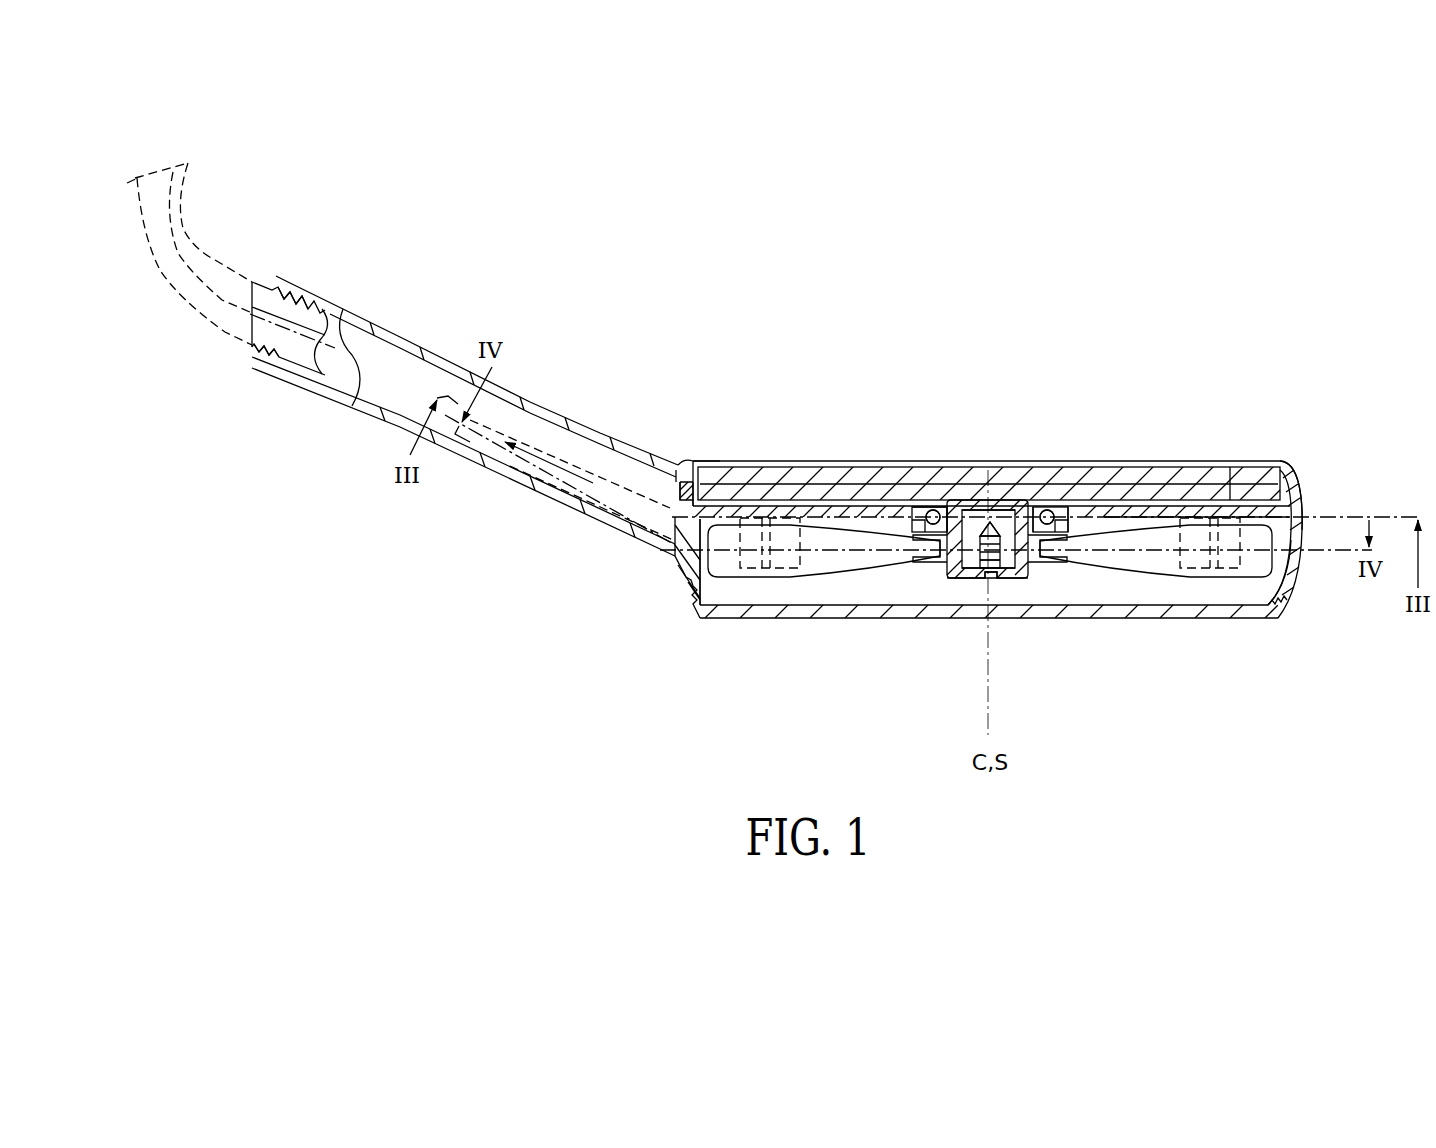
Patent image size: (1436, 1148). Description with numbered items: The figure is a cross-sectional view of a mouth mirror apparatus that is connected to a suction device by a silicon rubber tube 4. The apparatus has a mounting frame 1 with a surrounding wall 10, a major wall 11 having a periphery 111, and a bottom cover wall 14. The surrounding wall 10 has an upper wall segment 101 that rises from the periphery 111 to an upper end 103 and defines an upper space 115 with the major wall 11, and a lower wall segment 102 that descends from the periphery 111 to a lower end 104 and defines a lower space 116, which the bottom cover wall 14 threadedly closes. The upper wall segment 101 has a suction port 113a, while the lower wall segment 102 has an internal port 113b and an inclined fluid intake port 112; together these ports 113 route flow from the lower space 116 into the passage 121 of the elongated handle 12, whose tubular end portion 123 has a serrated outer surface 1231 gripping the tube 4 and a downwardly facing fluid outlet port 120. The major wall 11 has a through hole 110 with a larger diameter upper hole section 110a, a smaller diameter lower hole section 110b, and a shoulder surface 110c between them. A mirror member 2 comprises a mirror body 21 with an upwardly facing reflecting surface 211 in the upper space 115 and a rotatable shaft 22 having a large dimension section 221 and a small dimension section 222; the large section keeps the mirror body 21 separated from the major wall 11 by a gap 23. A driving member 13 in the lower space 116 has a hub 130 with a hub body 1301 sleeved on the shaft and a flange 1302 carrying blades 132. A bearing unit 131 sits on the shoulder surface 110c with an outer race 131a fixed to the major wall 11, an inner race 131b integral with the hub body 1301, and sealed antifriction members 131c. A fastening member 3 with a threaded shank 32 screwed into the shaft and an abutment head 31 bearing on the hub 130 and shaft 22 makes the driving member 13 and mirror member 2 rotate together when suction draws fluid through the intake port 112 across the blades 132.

The mounting frame 1 is at (1352, 338).
The surrounding wall 10 is at (1355, 427).
The upper wall segment 101 is at (1292, 476).
The lower wall segment 102 is at (1290, 565).
The upper end 103 is at (1288, 463).
The lower end 104 is at (1272, 605).
The major wall 11 is at (1163, 500).
The periphery 111 is at (1287, 512).
The fluid intake port 112 is at (778, 612).
The connecting portion 113 is at (757, 402).
The suction port 113a is at (680, 490).
The internal port 113b is at (723, 503).
The upper space 115 is at (793, 466).
The lower space 116 is at (760, 600).
The elongated handle 12 is at (432, 352).
The fluid outlet port 120 is at (256, 313).
The passage 121 is at (520, 416).
The tubular end portion 123 is at (274, 386).
The serrated outer surface 1231 is at (292, 292).
The driving member 13 is at (1122, 592).
The hub 130 is at (1035, 738).
The hub body 1301 is at (1043, 572).
The flange 1302 is at (1060, 558).
The bearing unit 131 is at (1000, 358).
The outer race 131a is at (1078, 510).
The inner race 131b is at (1022, 505).
The antifriction members 131c is at (1048, 510).
The blades 132 is at (820, 575).
The bottom cover wall 14 is at (1200, 612).
The mirror member 2 is at (1197, 458).
The mirror body 21 is at (833, 470).
The reflecting surface 211 is at (850, 472).
The rotatable shaft 22 is at (975, 580).
The large dimension section 221 is at (975, 520).
The small dimension section 222 is at (963, 585).
The gap 23 is at (1247, 490).
The fastening member 3 is at (1022, 590).
The abutment head 31 is at (1003, 585).
The threaded shank 32 is at (1006, 523).
The silicon rubber tube 4 is at (205, 246).
The through hole 110 is at (845, 318).
The larger diameter upper hole section 110a is at (925, 506).
The smaller diameter lower hole section 110b is at (953, 518).
The shoulder surface 110c is at (938, 504).